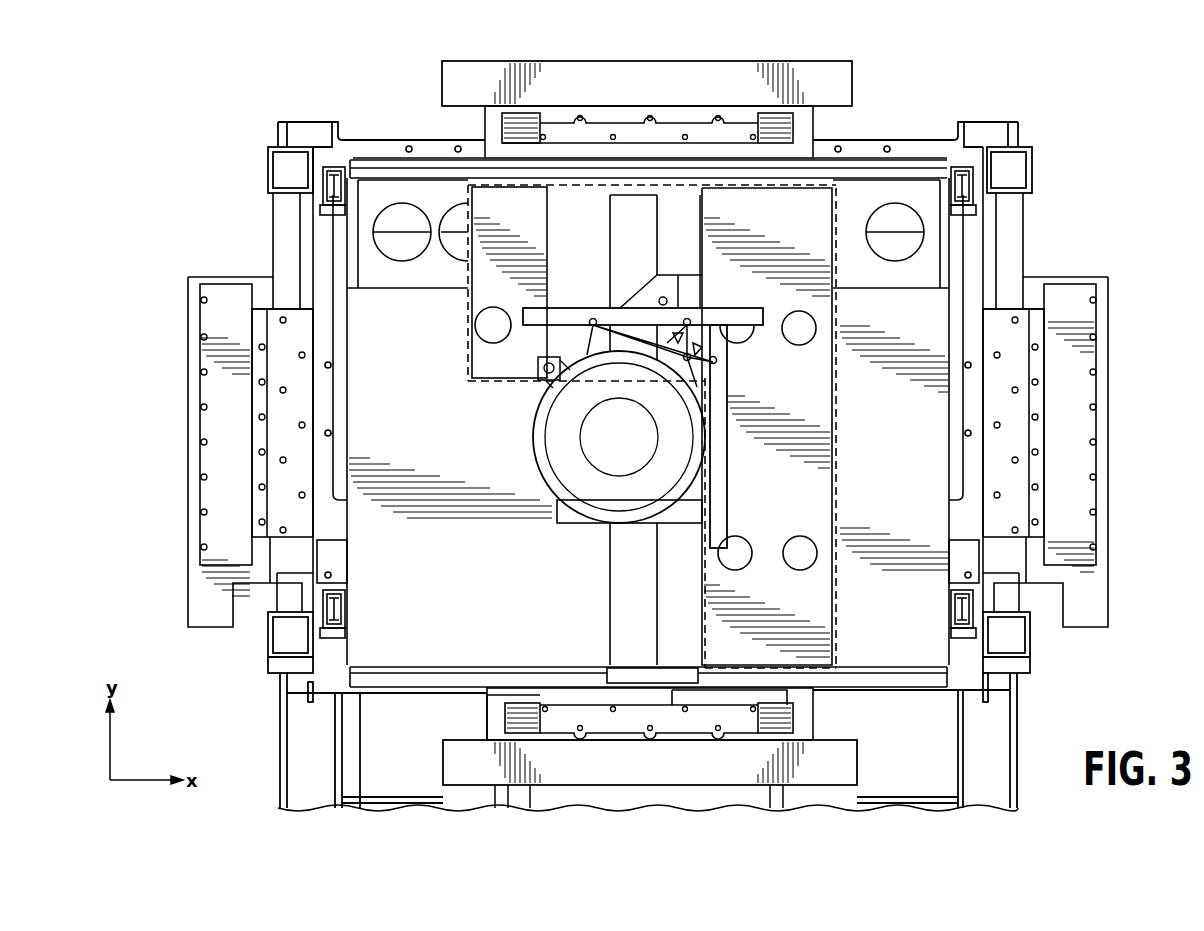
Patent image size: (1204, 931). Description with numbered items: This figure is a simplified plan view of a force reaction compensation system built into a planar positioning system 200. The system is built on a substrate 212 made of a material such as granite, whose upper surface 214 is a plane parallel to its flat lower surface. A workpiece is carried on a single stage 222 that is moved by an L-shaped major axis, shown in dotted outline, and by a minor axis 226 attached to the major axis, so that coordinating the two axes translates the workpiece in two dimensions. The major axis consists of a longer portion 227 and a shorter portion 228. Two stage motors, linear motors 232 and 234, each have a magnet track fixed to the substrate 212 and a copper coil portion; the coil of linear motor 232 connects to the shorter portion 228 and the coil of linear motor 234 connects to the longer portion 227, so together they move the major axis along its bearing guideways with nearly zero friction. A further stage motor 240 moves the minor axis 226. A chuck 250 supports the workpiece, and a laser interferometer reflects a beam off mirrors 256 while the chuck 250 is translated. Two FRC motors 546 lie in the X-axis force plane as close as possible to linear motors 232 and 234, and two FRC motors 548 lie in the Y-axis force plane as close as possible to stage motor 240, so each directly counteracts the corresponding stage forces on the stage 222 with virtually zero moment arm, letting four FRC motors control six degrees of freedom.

The positioning system 200 is at (1110, 142).
The substrate 212 is at (348, 664).
The upper surface 214 is at (352, 305).
The stage 222 is at (563, 652).
The minor axis 226 is at (555, 526).
The longer portion 227 is at (813, 657).
The shorter portion 228 is at (487, 197).
The linear motor 232 is at (585, 148).
The linear motor 234 is at (678, 673).
The stage motor 240 is at (627, 652).
The chuck 250 is at (533, 452).
The mirrors 256 is at (717, 313).
The FRC motors 546 is at (746, 123).
The FRC motors 548 is at (210, 462).